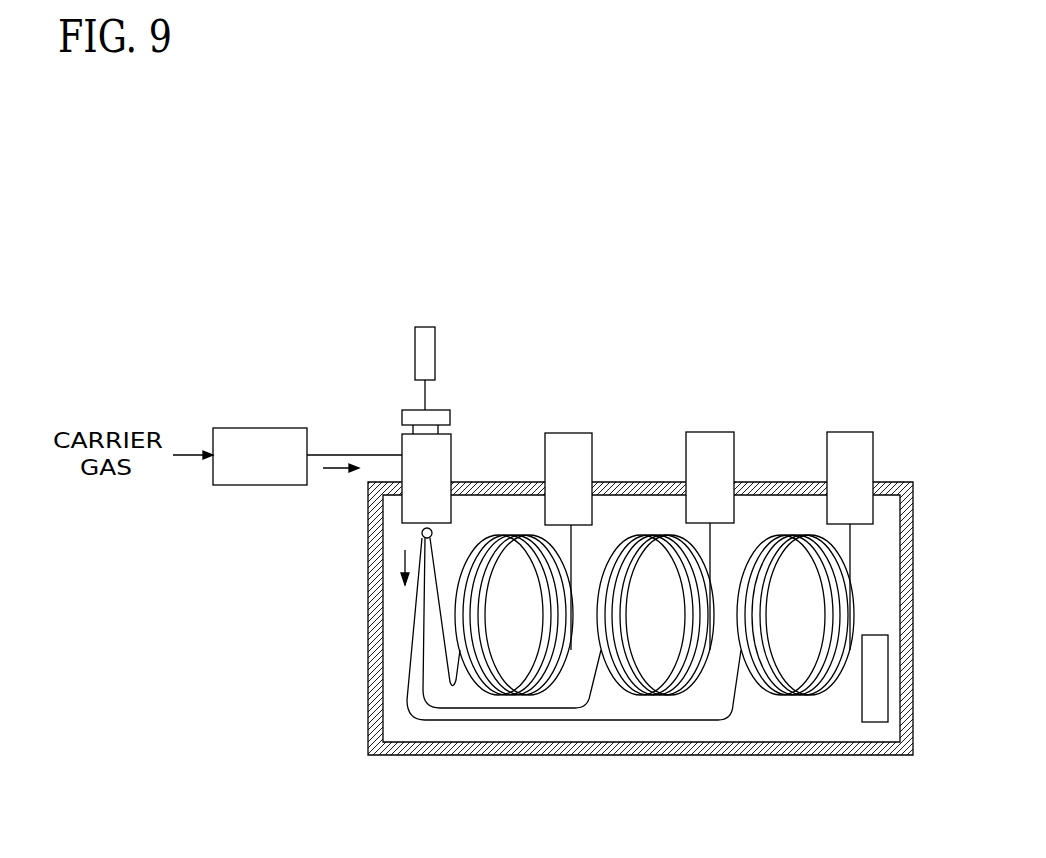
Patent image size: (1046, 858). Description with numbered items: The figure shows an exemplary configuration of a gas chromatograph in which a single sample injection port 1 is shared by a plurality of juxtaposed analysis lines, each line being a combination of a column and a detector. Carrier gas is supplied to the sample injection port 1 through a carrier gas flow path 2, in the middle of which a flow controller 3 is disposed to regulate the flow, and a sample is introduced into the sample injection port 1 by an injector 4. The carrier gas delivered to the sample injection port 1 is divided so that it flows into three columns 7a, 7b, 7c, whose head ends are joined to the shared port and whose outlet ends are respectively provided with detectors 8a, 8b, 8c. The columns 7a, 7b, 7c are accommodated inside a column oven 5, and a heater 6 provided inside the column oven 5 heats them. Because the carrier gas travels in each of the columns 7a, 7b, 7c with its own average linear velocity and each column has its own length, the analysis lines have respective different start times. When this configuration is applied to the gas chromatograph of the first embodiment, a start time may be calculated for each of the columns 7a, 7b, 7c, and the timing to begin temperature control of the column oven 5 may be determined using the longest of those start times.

The sample injection port 1 is at (452, 447).
The carrier gas flow path 2 is at (352, 455).
The flow controller 3 is at (242, 428).
The injector 4 is at (435, 360).
The column oven 5 is at (366, 610).
The heater 6 is at (890, 655).
The column 7a is at (503, 697).
The column 7b is at (655, 692).
The column 7c is at (793, 692).
The detector 8a is at (575, 432).
The detector 8b is at (717, 431).
The detector 8c is at (855, 432).